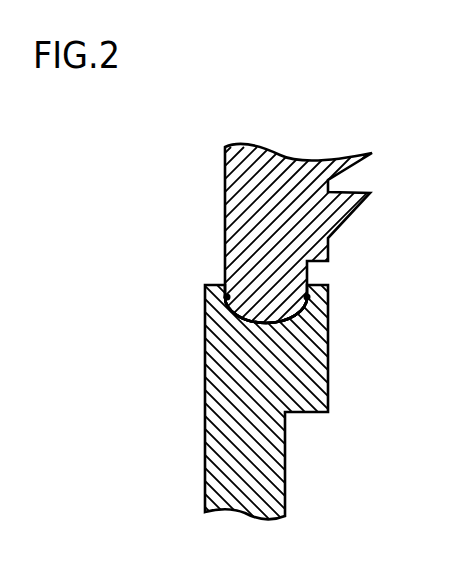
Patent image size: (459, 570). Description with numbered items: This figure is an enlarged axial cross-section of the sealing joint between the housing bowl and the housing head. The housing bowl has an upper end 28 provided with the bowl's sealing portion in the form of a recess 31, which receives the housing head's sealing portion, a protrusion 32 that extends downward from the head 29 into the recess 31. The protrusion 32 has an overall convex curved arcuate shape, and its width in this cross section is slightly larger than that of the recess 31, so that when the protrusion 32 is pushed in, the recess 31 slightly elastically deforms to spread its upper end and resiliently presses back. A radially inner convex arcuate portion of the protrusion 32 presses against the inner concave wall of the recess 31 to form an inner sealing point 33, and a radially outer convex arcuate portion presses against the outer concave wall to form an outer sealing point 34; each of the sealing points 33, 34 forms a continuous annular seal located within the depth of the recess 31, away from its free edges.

The upper end 28 is at (238, 452).
The upper member 29 is at (260, 180).
The recess 31 is at (263, 327).
The protrusion 32 is at (264, 321).
The inner sealing point 33 is at (227, 297).
The outer sealing point 34 is at (307, 297).